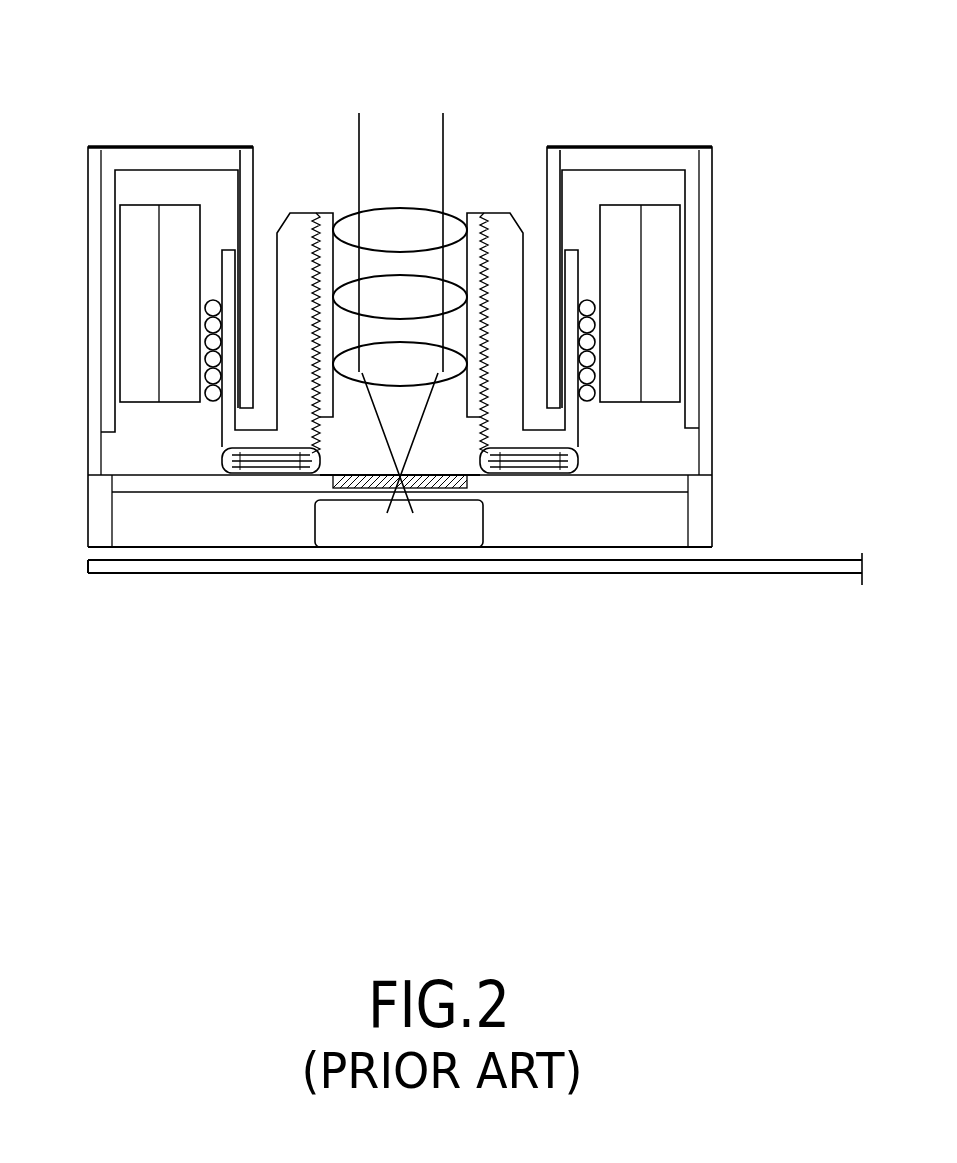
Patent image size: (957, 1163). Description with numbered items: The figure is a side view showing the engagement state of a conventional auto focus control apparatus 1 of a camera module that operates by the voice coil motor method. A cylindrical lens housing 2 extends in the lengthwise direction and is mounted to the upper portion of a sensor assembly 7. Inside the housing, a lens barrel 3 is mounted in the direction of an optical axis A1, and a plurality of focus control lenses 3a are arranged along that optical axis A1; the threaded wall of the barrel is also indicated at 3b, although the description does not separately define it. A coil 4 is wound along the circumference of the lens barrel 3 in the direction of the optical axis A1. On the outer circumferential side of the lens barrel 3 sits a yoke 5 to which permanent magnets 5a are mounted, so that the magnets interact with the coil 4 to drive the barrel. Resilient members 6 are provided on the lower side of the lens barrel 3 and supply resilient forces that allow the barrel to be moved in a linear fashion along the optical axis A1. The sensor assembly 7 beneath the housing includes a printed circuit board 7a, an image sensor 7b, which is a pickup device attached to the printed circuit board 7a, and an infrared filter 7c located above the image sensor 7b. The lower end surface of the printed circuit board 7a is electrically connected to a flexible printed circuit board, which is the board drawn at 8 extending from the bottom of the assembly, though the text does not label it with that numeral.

The auto focus control apparatus 1 is at (738, 105).
The lens housing 2 is at (706, 207).
The lens barrel 3 is at (506, 226).
The focus control lenses 3a is at (352, 228).
The lens barrel thread (right) 3b is at (470, 216).
The coil 4 is at (585, 398).
The yoke 5 is at (620, 150).
The permanent magnets 5a is at (668, 342).
The resilient members 6 is at (527, 477).
The sensor assembly 7 is at (452, 698).
The printed circuit board 7a is at (448, 558).
The image sensor 7b is at (397, 546).
The infrared filter 7c is at (343, 486).
The circuit board 8 is at (778, 576).
The optical axis A1 is at (443, 130).